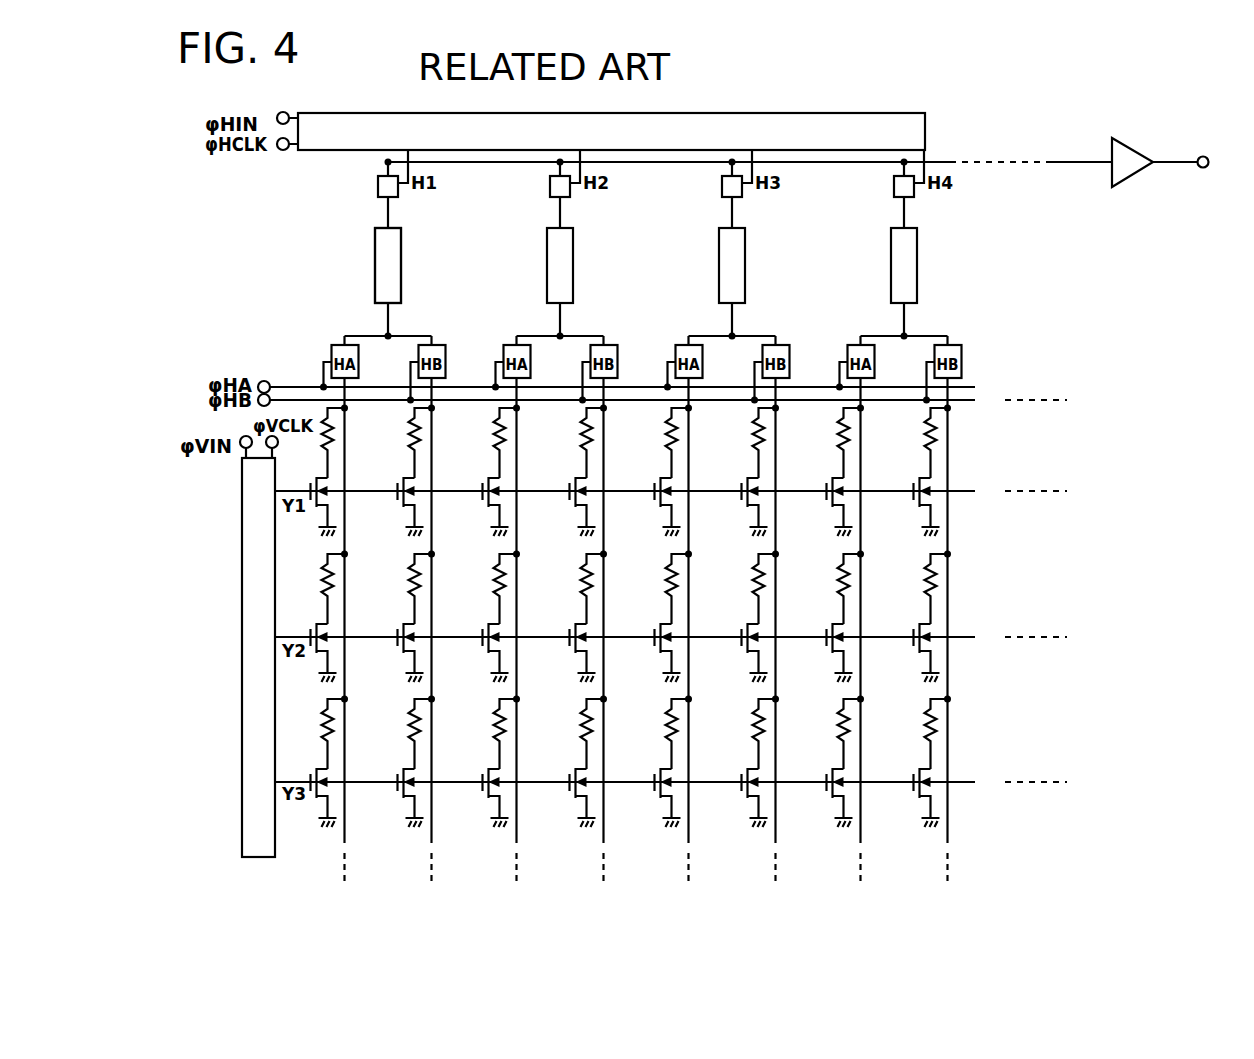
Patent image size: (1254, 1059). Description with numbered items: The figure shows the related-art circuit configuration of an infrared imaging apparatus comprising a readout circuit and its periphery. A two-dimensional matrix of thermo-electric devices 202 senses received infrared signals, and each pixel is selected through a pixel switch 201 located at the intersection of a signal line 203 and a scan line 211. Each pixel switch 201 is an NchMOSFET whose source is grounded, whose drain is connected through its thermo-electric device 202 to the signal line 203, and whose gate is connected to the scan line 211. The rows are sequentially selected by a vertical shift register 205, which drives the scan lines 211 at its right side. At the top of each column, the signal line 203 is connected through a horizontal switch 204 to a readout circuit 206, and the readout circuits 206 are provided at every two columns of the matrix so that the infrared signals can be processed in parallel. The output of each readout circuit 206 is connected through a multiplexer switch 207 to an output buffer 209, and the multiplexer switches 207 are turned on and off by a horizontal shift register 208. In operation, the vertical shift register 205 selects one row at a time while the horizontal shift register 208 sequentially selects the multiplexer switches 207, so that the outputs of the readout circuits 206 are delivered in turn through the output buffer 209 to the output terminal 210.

The pixel switch 201 is at (938, 772).
The thermo-electric device 202 is at (942, 580).
The signal line 203 is at (953, 437).
The horizontal switch 204 is at (959, 352).
The vertical shift register 205 is at (275, 845).
The readout circuit 206 is at (402, 252).
The multiplexer switch 207 is at (399, 192).
The horizontal shift register 208 is at (925, 120).
The output buffer 209 is at (1131, 138).
The output terminal 210 is at (1203, 169).
The scan line 211 is at (965, 783).